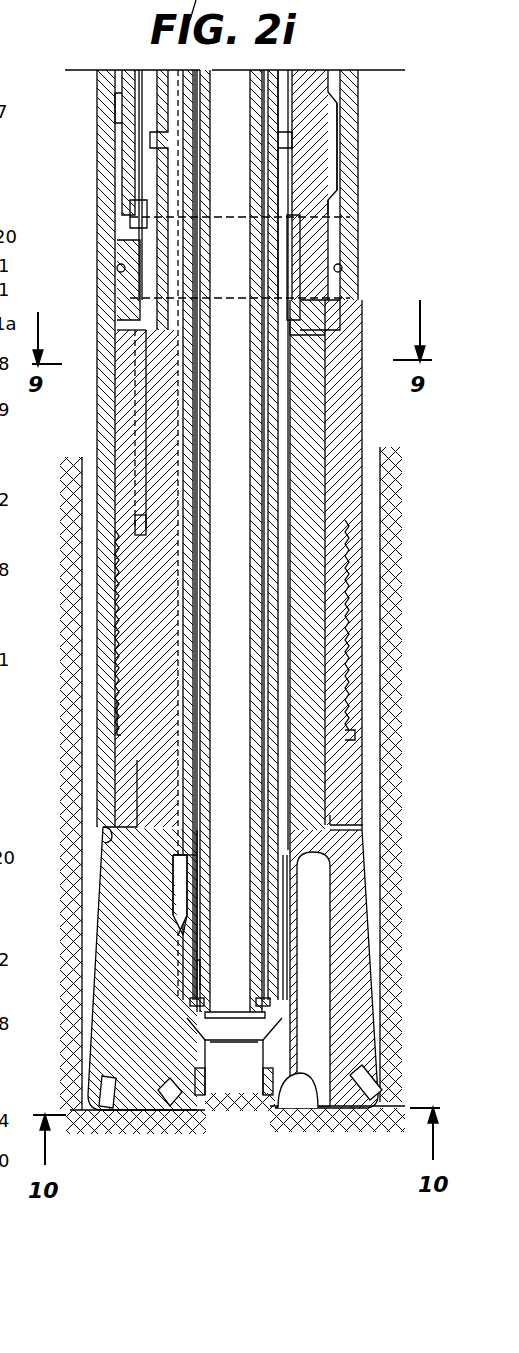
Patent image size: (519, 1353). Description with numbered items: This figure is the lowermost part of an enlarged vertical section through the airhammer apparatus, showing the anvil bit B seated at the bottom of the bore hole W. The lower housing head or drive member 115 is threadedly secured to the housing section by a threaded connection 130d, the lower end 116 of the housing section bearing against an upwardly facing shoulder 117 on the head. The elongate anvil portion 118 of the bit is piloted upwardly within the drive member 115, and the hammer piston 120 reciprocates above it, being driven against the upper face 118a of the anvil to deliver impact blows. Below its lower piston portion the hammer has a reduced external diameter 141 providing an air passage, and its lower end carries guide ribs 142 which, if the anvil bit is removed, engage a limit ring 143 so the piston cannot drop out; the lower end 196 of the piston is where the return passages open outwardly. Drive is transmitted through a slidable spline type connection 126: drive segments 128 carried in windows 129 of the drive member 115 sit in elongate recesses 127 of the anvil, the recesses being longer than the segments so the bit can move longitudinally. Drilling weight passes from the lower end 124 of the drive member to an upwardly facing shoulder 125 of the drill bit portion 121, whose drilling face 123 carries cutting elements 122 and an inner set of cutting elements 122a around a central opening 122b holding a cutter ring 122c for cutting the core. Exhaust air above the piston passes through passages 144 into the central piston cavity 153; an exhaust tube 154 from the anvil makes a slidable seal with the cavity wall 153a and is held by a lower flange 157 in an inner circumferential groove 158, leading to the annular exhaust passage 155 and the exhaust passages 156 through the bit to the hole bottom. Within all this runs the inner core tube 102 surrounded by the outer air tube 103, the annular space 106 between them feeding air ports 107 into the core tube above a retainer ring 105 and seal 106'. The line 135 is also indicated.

The inner core tube 102 is at (256, 786).
The outer air tube 103 is at (190, 875).
The retainer ring 105 is at (187, 1020).
The annular space 106 is at (156, 889).
The seal 106' is at (187, 996).
The air ports 107 is at (205, 975).
The lower housing head or drive member 115 is at (335, 412).
The lower end of the housing section 116 is at (350, 692).
The upwardly facing shoulder 117 is at (356, 735).
The anvil portion 118 is at (310, 505).
The upper face of the anvil 118a is at (130, 212).
The hammer piston 120 is at (318, 140).
The drill bit portion 121 is at (360, 968).
The cutting elements 122 is at (372, 1086).
The inner circular set of cutting elements 122a is at (180, 1108).
The central opening 122b is at (243, 1100).
The cutter ring 122c is at (310, 1102).
The drilling face 123 is at (145, 1115).
The lower end of the drive member 124 is at (110, 768).
The upwardly facing shoulder of the bit 125 is at (104, 826).
The slidable spline type connection 126 is at (112, 437).
The elongate recesses 127 is at (140, 527).
The drive segments 128 is at (128, 404).
The windows 129 is at (118, 332).
The threaded connection 130d is at (115, 690).
The line 135 is at (0, 1230).
The reduced external diameter 141 is at (356, 88).
The guide ribs 142 is at (337, 164).
The limit ring 143 is at (342, 268).
The passages 144 is at (71, 185).
The central piston cavity 153 is at (290, 90).
The wall of the piston cavity 153a is at (305, 188).
The exhaust tube 154 is at (300, 240).
The annular exhaust passage 155 is at (285, 433).
The exhaust passages 156 is at (318, 920).
The lower outwardly extending flange 157 is at (300, 318).
The inner circumferential groove 158 is at (300, 332).
The lower end of the hammer piston 196 is at (140, 234).
The anvil bit B is at (96, 918).
The bore hole W is at (380, 846).